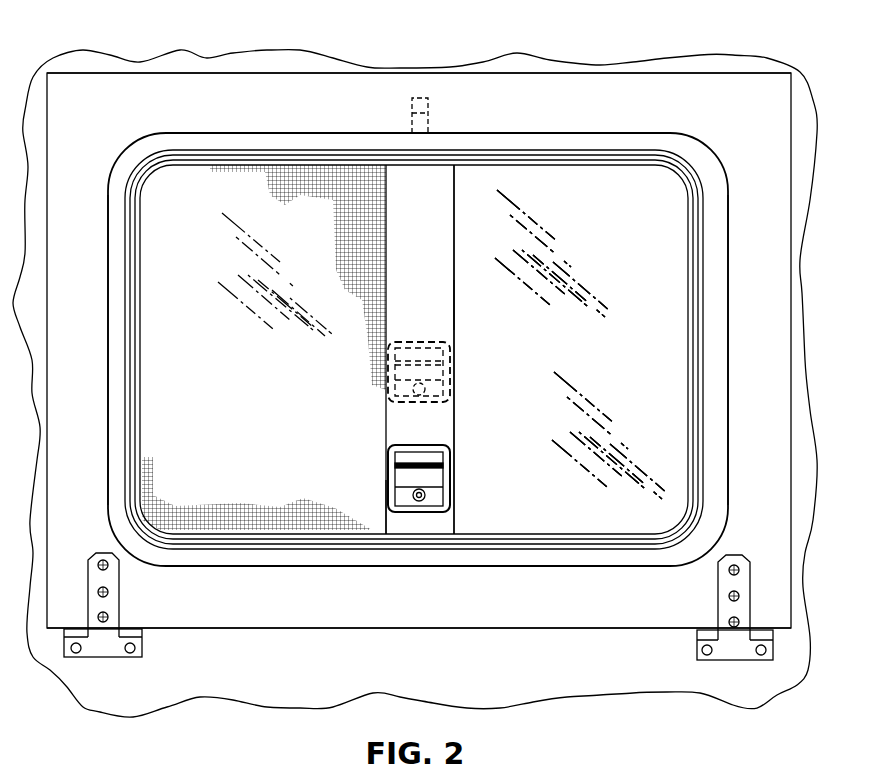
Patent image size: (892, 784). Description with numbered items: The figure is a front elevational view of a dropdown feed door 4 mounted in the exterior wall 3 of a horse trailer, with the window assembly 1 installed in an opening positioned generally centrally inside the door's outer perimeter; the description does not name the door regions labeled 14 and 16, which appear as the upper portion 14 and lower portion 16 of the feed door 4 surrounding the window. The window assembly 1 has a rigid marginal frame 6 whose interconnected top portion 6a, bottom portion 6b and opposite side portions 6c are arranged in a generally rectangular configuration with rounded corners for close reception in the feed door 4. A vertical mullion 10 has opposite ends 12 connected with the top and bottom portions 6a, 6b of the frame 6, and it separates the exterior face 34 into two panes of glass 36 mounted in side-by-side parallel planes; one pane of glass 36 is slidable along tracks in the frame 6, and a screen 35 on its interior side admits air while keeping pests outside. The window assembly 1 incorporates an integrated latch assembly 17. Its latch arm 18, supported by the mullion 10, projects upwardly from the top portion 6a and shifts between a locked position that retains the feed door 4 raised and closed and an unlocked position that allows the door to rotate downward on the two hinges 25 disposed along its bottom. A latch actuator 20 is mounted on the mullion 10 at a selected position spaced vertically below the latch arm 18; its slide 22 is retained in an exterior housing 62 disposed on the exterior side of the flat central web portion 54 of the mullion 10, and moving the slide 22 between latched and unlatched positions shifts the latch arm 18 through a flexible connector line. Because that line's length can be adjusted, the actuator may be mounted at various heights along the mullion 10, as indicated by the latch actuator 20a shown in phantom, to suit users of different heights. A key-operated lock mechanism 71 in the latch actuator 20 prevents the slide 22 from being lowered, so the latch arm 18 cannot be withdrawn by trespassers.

The window assembly 1 is at (610, 118).
The exterior wall 3 is at (805, 478).
The dropdown feed door 4 is at (725, 70).
The marginal frame 6 is at (728, 187).
The top portion of frame 6a is at (545, 133).
The bottom portion of frame 6b is at (318, 568).
The side portions of frame 6c is at (108, 245).
The mullion 10 is at (432, 222).
The opposite ends of mullion 12 is at (383, 193).
The upper panel portion 14 is at (130, 94).
The lower panel portion 16 is at (557, 607).
The latch assembly 17 is at (382, 511).
The latch arm 18 is at (416, 97).
The latch actuator 20 is at (440, 465).
The latch actuator in alternate position 20a is at (447, 365).
The slide 22 is at (430, 470).
The hinges 25 is at (103, 652).
The exterior face 34 is at (658, 303).
The screen 35 is at (300, 192).
The panes of glass 36 is at (200, 348).
The central web portion 54 is at (440, 303).
The exterior housing 62 is at (427, 443).
The lock mechanism 71 is at (424, 497).